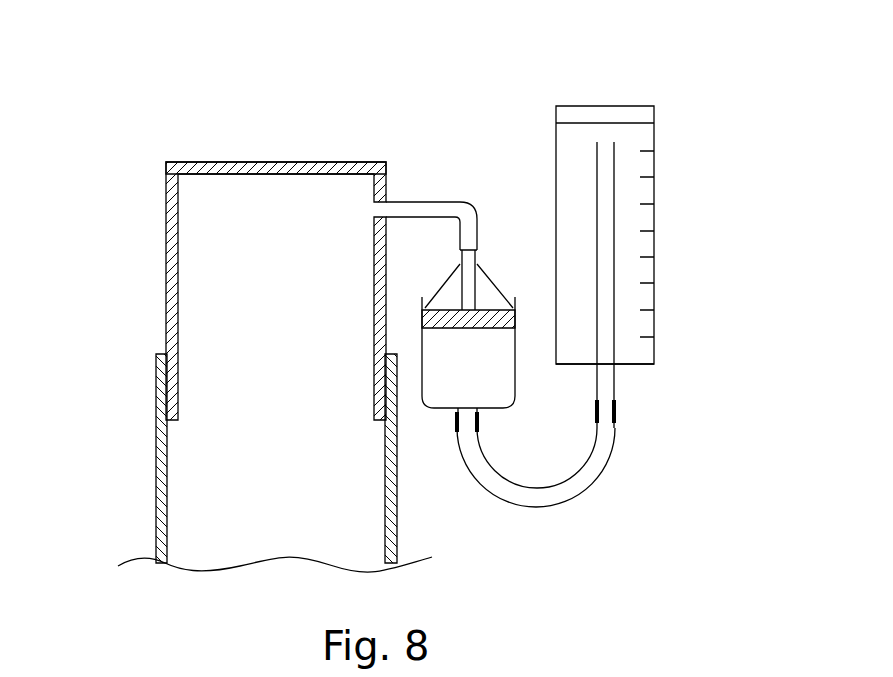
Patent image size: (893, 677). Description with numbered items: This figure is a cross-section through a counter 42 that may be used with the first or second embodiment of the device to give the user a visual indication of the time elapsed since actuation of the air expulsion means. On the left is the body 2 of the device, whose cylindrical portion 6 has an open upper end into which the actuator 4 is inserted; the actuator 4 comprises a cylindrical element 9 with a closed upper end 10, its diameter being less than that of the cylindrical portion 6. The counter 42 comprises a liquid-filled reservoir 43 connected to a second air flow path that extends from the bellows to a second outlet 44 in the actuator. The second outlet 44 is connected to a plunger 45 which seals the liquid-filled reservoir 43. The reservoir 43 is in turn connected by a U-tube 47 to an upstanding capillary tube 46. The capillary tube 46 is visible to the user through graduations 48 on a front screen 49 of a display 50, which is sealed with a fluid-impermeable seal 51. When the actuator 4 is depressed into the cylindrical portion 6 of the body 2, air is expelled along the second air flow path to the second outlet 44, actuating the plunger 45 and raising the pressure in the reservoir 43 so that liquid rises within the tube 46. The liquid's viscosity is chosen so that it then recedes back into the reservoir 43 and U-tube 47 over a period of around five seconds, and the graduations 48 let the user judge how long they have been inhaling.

The body 2 is at (126, 499).
The actuator 4 is at (148, 282).
The cylindrical portion 6 is at (157, 457).
The cylindrical element 9 is at (166, 218).
The closed upper end 10 is at (264, 163).
The counter 42 is at (732, 271).
The liquid-filled reservoir 43 is at (437, 398).
The second outlet 44 is at (383, 200).
The plunger 45 is at (487, 317).
The upstanding capillary tube 46 is at (607, 322).
The U-tube 47 is at (557, 493).
The graduations 48 is at (655, 177).
The front screen 49 is at (655, 240).
The display 50 is at (655, 353).
The fluid-impermeable seal 51 is at (620, 113).